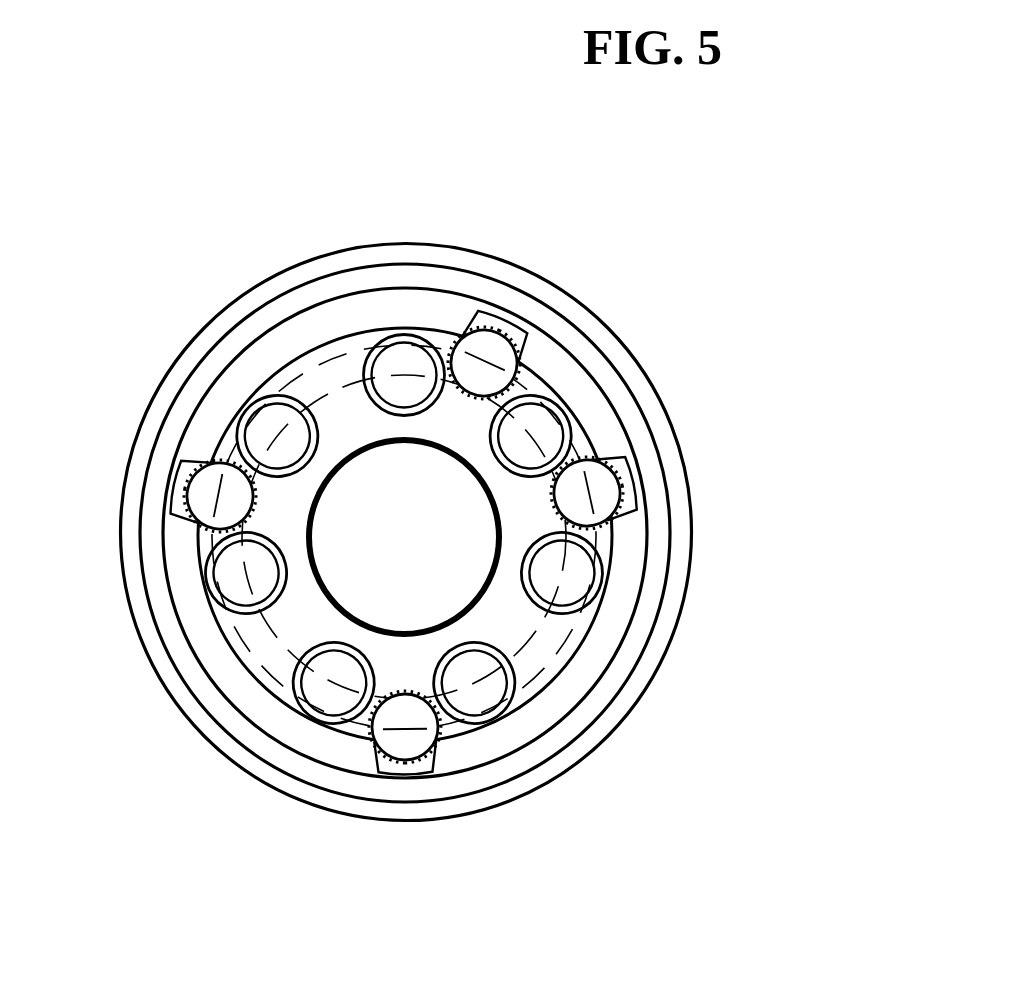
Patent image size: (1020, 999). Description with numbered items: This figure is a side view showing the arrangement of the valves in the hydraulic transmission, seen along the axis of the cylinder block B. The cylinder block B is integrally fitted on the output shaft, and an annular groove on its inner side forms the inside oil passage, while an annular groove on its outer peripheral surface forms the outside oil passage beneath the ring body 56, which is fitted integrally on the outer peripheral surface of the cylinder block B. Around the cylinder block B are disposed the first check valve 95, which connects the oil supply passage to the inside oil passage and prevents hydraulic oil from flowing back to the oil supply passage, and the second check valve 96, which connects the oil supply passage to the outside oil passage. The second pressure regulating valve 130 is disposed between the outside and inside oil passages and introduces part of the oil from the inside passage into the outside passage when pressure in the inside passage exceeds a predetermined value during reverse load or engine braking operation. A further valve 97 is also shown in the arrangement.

The ring body 56 is at (638, 685).
The first check valve 95 is at (212, 512).
The second check valve 96 is at (595, 465).
The clamp 97 is at (450, 755).
The second pressure regulating valve 130 is at (500, 345).
The cylinder block B is at (542, 708).